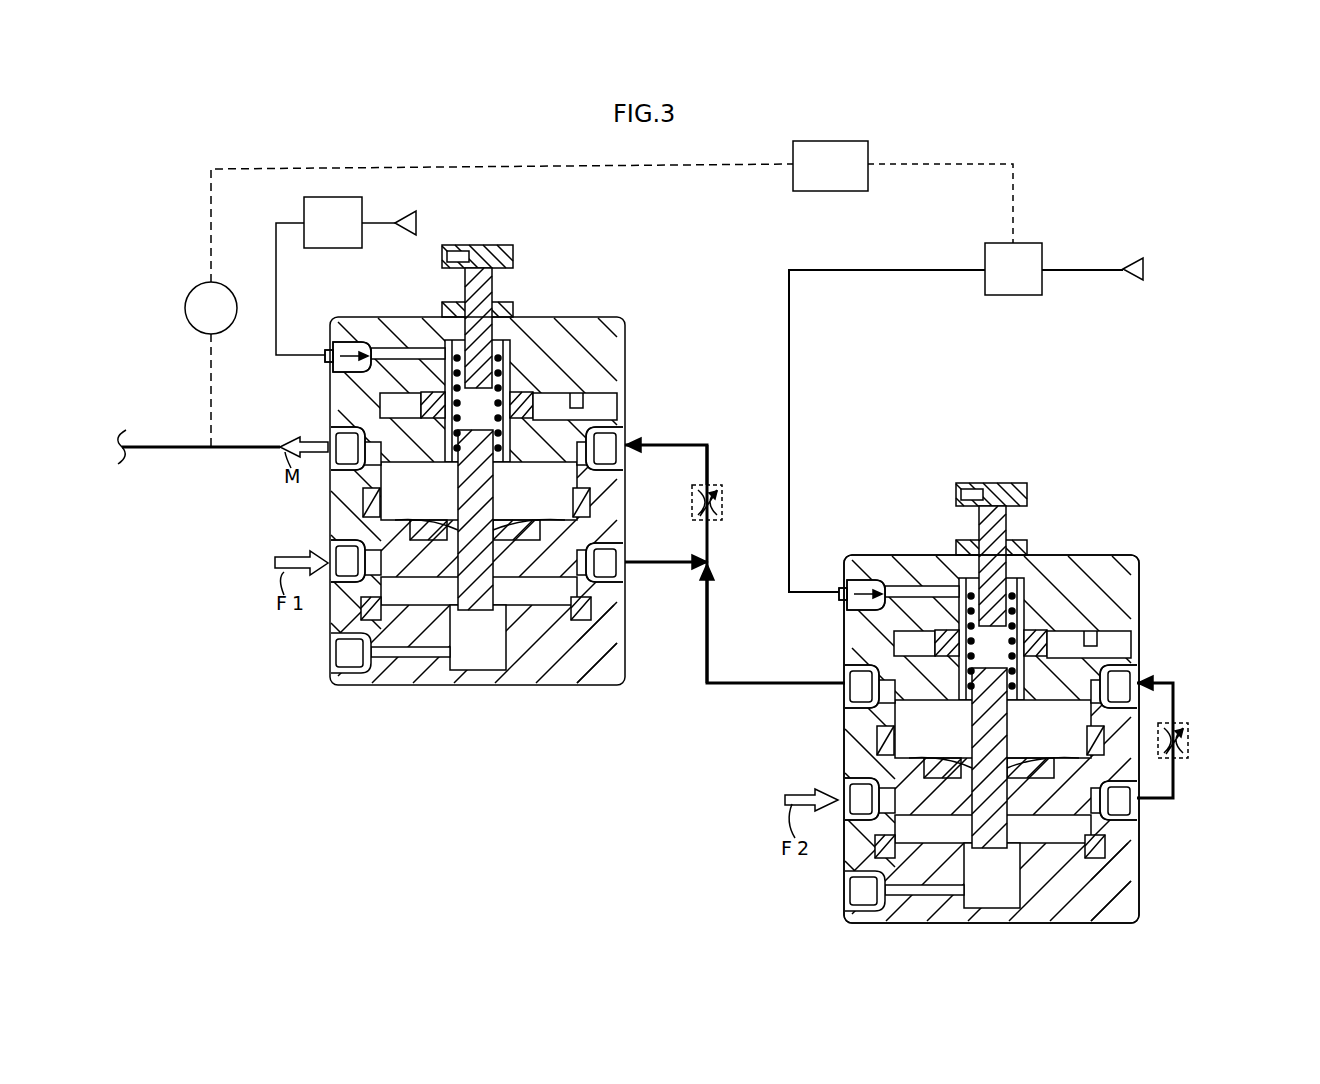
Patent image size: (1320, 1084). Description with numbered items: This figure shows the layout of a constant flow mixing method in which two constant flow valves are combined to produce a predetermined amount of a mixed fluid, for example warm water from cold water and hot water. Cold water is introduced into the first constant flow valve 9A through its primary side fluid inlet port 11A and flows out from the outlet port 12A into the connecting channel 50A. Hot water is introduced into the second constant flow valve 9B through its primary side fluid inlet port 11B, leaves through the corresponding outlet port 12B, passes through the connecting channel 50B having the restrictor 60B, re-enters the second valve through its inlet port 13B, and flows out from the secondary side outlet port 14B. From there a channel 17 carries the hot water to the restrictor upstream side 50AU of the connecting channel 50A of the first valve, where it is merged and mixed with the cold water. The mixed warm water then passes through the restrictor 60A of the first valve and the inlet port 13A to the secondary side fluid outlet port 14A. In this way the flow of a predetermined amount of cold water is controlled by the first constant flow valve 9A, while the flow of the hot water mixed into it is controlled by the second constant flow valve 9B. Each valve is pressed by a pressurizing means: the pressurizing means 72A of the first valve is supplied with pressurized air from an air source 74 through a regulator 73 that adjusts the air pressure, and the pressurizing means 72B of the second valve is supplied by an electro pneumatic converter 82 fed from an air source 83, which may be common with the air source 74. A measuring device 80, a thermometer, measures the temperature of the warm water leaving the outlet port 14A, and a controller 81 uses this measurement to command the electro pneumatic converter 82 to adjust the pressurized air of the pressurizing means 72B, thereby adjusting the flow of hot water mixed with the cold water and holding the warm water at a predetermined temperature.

The first constant flow valve 9A is at (626, 309).
The second constant flow valve 9B is at (1064, 527).
The primary side fluid inlet port 11A is at (335, 553).
The primary side fluid inlet port 11B is at (846, 793).
The outlet port 12A is at (612, 567).
The second outlet port 12B is at (1133, 863).
The inlet port 13A is at (612, 437).
The second return port 13B is at (1118, 668).
The secondary side fluid outlet port 14A is at (331, 437).
The secondary side outlet port 14B is at (856, 694).
The channel 17 is at (702, 603).
The connecting channel 50A is at (660, 447).
The restrictor upstream side 50AU is at (718, 468).
The connecting channel 50B is at (1176, 785).
The restrictor 60A is at (692, 505).
The restrictor 60B is at (1183, 758).
The pressurizing means 72A is at (356, 342).
The pressurizing means 72B is at (872, 582).
The regulator 73 is at (355, 237).
The air source 74 is at (418, 221).
The measuring device 80 is at (185, 305).
The controller 81 is at (858, 178).
The electro pneumatic converter 82 is at (1022, 280).
The air source 83 is at (1144, 268).